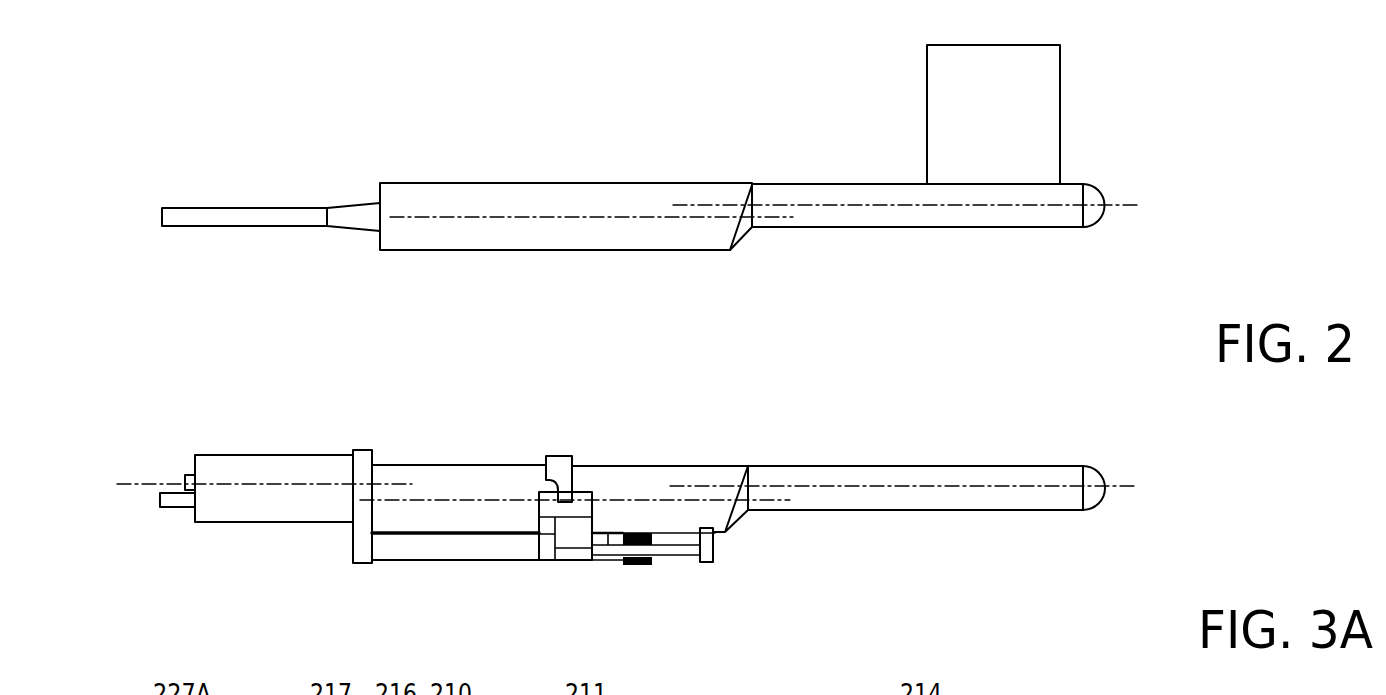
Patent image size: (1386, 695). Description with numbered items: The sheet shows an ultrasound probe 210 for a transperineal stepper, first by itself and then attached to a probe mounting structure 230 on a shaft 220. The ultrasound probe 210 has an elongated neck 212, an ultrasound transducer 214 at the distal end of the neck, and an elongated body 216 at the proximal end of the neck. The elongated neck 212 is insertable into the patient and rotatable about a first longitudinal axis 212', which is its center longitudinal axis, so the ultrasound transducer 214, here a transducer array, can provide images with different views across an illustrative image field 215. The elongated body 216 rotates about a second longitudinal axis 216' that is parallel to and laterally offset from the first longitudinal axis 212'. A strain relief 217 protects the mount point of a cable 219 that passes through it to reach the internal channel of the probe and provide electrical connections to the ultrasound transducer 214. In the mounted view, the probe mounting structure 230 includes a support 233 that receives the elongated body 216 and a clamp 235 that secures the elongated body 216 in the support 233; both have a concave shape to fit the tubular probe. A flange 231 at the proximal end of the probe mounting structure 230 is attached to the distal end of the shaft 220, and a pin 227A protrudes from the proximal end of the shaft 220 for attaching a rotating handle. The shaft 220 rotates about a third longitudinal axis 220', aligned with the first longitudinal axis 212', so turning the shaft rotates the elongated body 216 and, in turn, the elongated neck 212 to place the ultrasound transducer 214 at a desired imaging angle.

In FIG. 2, the ultrasound probe 210 is at (520, 177).
In FIG. 3A, the ultrasound probe 210 is at (522, 460).
In FIG. 2, the elongated neck 212 is at (917, 251).
In FIG. 3A, the elongated neck 212 is at (827, 532).
In FIG. 2, the first longitudinal axis 212' is at (1119, 251).
In FIG. 3A, the first longitudinal axis 212' is at (1119, 532).
In FIG. 2, the ultrasound transducer 214 is at (1010, 195).
In FIG. 3A, the ultrasound transducer 214 is at (925, 466).
In FIG. 2, the image field 215 is at (1060, 102).
In FIG. 2, the elongated body 216 is at (586, 251).
In FIG. 3A, the elongated body 216 is at (575, 470).
In FIG. 2, the second longitudinal axis 216' is at (760, 252).
In FIG. 3A, the second longitudinal axis 216' is at (751, 532).
In FIG. 2, the strain relief 217 is at (350, 231).
In FIG. 2, the cable 219 is at (218, 226).
In FIG. 3A, the cable 219 is at (170, 507).
In FIG. 3A, the shaft 220 is at (274, 527).
In FIG. 3A, the third longitudinal axis 220' is at (245, 432).
In FIG. 3A, the pin 227A is at (190, 475).
In FIG. 3A, the probe mounting structure 230 is at (520, 567).
In FIG. 3A, the flange 231 is at (353, 555).
In FIG. 3A, the support 233 is at (572, 545).
In FIG. 3A, the clamp 235 is at (557, 456).